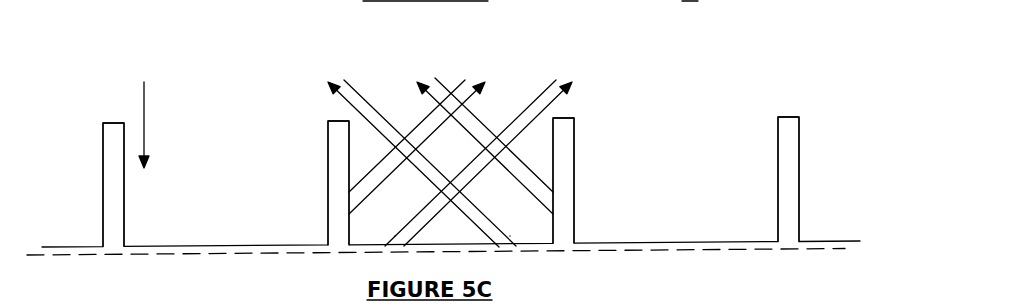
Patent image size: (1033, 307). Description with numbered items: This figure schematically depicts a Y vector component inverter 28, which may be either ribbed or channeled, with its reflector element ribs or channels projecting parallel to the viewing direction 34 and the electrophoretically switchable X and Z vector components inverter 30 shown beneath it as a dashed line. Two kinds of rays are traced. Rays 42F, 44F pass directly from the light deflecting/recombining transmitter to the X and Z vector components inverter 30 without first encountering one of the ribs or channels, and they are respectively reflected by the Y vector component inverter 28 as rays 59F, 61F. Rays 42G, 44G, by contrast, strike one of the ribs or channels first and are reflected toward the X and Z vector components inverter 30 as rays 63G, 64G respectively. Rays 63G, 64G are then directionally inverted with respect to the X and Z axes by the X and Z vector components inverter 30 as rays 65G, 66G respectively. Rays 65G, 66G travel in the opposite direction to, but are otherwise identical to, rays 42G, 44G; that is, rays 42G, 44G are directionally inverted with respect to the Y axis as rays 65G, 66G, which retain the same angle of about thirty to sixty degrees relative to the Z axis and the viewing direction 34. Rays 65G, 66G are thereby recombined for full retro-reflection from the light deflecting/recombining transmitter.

The Y vector component inverter 28 is at (813, 114).
The X and Z vector components inverter 30 is at (716, 249).
The viewing direction 34 is at (145, 127).
The ray 44F is at (342, 80).
The ray 66G is at (344, 98).
The ray 61F is at (420, 90).
The ray 44G is at (436, 79).
The ray 42G is at (465, 80).
The ray 59F is at (494, 90).
The ray 42F is at (537, 98).
The ray 65G is at (548, 104).
The ray 63G is at (383, 228).
The ray 64G is at (518, 228).